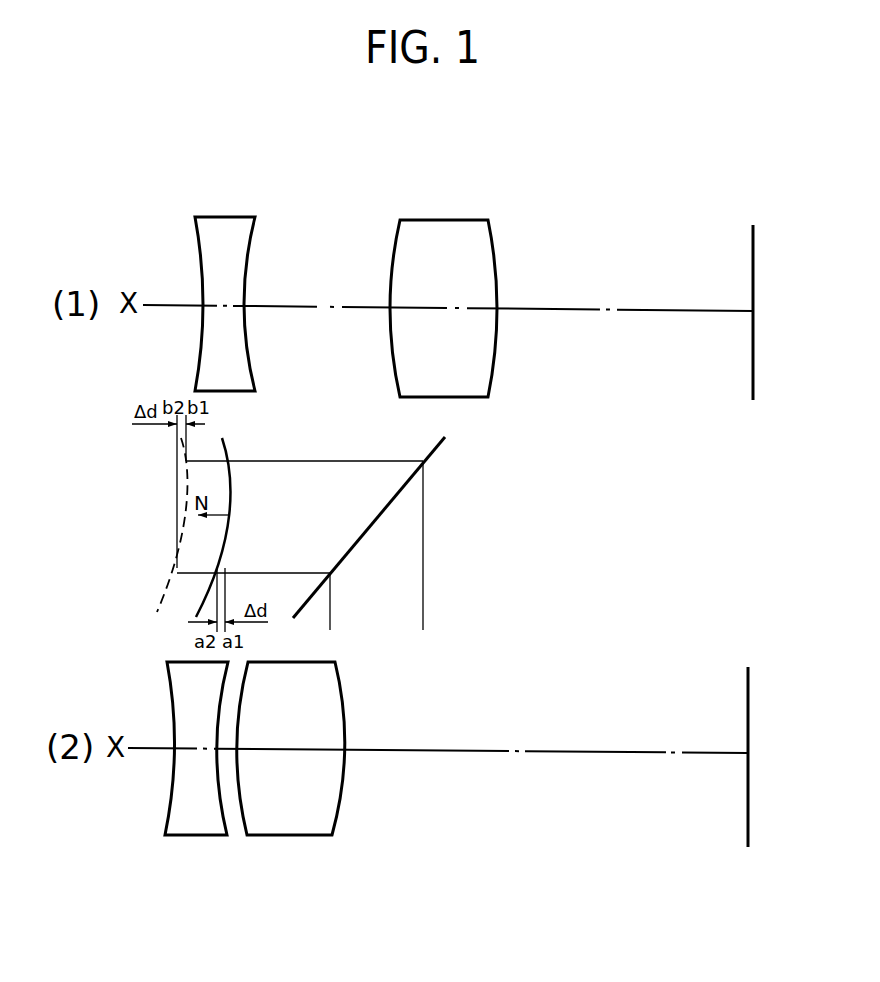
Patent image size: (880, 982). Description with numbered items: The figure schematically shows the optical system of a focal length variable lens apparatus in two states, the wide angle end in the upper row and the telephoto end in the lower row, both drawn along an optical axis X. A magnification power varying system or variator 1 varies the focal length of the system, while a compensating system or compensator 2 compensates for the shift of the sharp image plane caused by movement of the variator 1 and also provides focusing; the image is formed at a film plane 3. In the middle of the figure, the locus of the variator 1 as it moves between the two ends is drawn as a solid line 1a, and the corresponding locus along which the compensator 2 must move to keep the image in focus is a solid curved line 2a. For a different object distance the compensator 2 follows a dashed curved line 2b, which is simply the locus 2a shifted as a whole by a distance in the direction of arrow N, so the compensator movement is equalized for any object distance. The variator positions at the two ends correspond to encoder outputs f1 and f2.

The magnification power varying system 1 is at (467, 220).
The compensating system 2 is at (241, 217).
The film plane 3 is at (755, 245).
The solid line 1a is at (388, 508).
The solid curved line 2a is at (229, 482).
The dashed curved line 2b is at (179, 540).
The encoder output signal f1 is at (424, 560).
The encoder output signal f2 is at (331, 616).